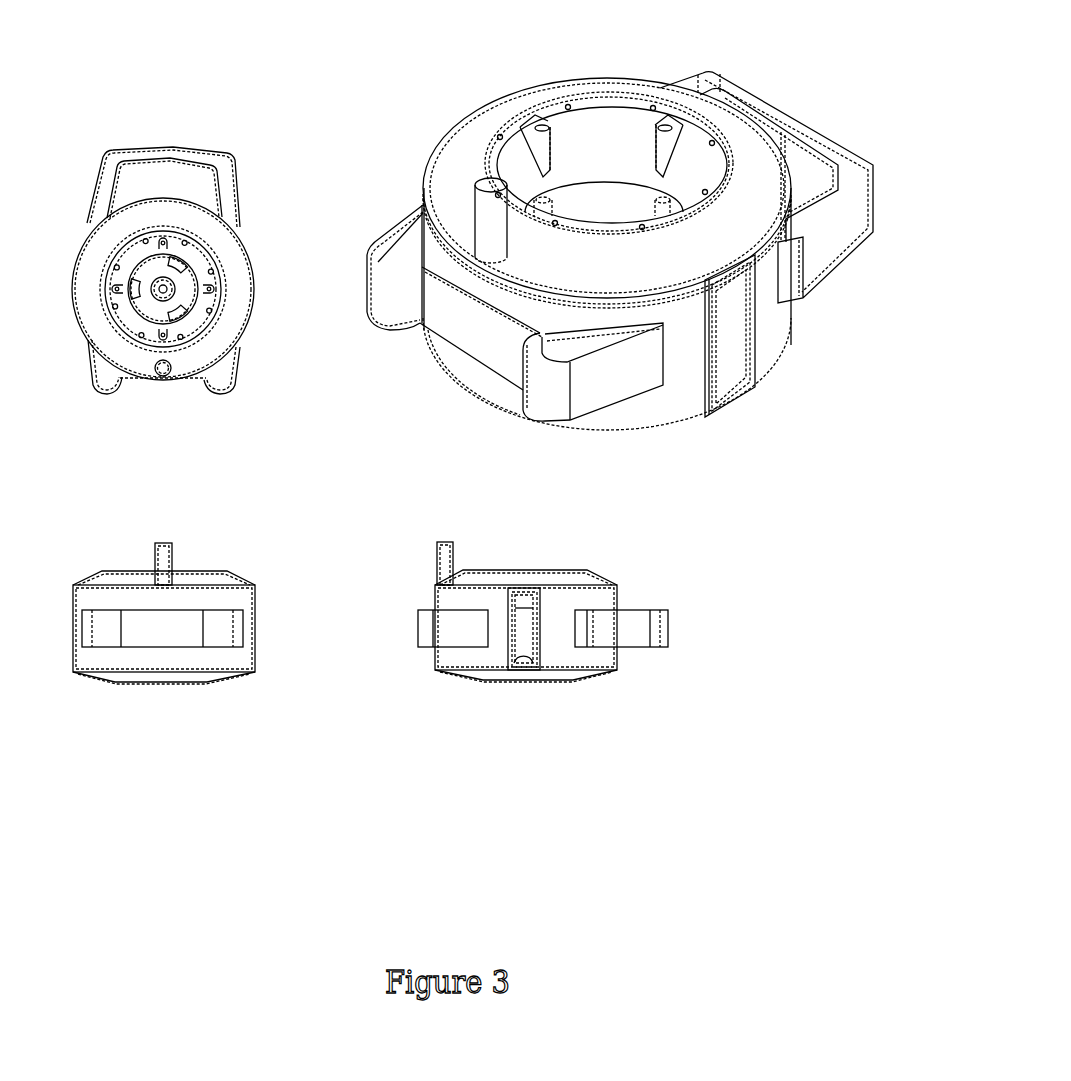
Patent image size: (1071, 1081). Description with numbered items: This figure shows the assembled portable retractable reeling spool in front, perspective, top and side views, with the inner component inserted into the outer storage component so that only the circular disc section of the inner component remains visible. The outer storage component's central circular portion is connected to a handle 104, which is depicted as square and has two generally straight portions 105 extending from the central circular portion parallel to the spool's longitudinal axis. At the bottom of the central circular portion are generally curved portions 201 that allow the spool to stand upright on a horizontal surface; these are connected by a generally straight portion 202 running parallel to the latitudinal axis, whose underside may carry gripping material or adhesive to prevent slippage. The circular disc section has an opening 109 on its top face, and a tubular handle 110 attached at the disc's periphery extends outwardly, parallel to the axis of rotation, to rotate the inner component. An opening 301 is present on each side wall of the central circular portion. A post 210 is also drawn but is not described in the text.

In FIG. 3a, the handle 104 is at (203, 148).
In FIG. 3b, the handle 104 is at (833, 128).
In FIG. 3a, the portions 105 is at (233, 190).
In FIG. 3b, the portions 105 is at (680, 80).
In FIG. 3b, the opening 109 is at (597, 182).
In FIG. 3c, the tubular handle 110 is at (155, 557).
In FIG. 3d, the tubular handle 110 is at (437, 565).
In FIG. 3a, the portions 201 is at (237, 365).
In FIG. 3b, the portions 201 is at (387, 233).
In FIG. 3a, the portion 202 is at (190, 382).
In FIG. 3b, the portion 202 is at (470, 357).
In FIG. 3b, the cylindrical post 210 is at (473, 213).
In FIG. 3b, the opening 301 is at (745, 400).
In FIG. 3d, the opening 301 is at (530, 680).